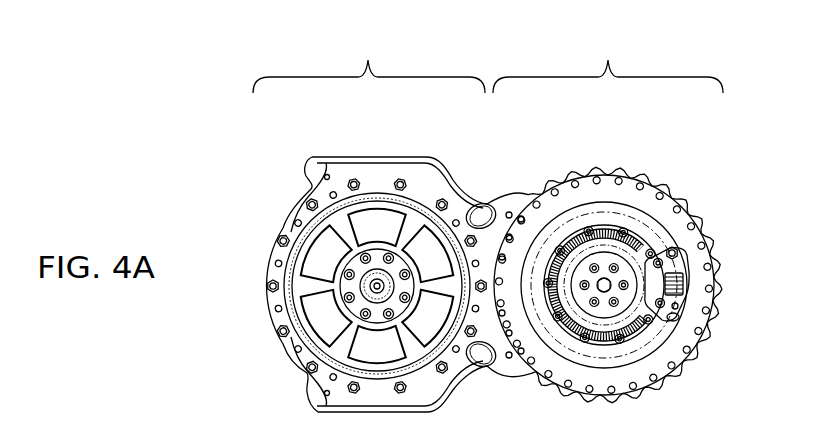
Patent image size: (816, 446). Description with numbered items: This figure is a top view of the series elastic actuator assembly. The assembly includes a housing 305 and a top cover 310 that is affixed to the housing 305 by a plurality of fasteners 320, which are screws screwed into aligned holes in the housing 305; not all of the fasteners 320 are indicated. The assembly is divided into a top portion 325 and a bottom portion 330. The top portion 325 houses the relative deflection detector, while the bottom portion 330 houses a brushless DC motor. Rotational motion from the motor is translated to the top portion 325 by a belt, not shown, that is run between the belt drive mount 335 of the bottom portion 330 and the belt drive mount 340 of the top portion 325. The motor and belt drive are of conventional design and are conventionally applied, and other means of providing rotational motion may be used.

The housing 305 is at (307, 160).
The top cover 310 is at (380, 177).
The fasteners 320 is at (267, 238).
The top portion 325 is at (369, 61).
The bottom portion 330 is at (608, 61).
The belt drive mount 335 is at (604, 247).
The belt drive mount 340 is at (298, 292).